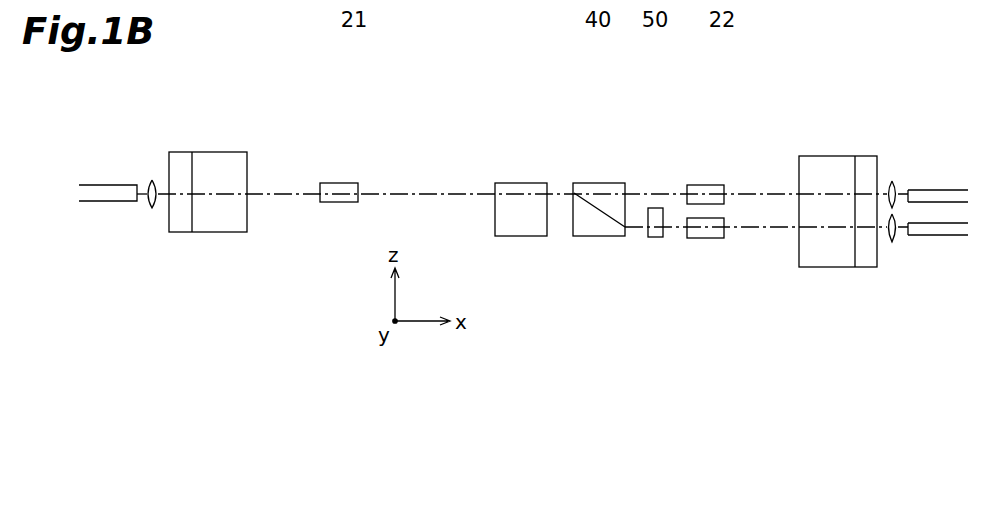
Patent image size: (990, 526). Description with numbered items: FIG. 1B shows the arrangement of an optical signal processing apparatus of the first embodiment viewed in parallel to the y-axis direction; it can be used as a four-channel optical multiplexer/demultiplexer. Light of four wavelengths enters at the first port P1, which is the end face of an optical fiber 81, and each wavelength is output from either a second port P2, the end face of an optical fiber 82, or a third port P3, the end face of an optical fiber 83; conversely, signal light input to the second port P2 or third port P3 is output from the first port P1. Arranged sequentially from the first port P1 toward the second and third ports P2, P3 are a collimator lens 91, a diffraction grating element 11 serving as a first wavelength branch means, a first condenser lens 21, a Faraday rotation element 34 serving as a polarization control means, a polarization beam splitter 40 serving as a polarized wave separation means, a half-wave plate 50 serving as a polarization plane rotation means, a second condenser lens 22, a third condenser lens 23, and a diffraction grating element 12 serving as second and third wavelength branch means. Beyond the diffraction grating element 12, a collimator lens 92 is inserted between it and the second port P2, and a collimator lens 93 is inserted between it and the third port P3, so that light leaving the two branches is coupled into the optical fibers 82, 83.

The diffraction grating element 11 is at (231, 233).
The diffraction grating element 12 is at (835, 267).
The first condenser lens 21 is at (339, 203).
The second condenser lens 22 is at (706, 185).
The third condenser lens 23 is at (706, 238).
The Faraday rotation element 34 is at (522, 237).
The polarization beam splitter 40 is at (600, 237).
The λ/2 plate 50 is at (656, 238).
The optical fiber 81 is at (106, 201).
The optical fiber 82 is at (949, 190).
The optical fiber 83 is at (949, 236).
The collimator lens 91 is at (146, 206).
The collimator lens 92 is at (888, 180).
The collimator lens 93 is at (888, 243).
The first port P1 is at (147, 180).
The second port P2 is at (905, 189).
The third port P3 is at (905, 237).